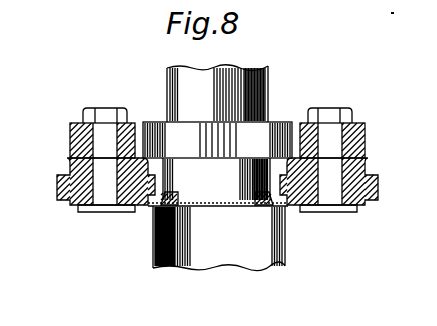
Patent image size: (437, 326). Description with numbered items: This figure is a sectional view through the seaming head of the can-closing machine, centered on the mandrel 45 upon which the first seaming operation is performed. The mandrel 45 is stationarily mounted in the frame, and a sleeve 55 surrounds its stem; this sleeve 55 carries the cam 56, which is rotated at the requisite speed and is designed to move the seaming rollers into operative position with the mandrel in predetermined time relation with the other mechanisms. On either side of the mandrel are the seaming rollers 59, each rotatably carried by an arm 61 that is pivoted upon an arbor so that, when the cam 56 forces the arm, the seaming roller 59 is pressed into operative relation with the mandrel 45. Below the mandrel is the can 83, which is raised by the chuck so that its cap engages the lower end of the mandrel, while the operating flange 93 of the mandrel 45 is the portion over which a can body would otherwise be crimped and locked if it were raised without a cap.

The sleeve 55 is at (217, 93).
The cam 56 is at (217, 140).
The mandrel 45 is at (216, 179).
The operating flange 93 is at (272, 208).
The can 83 is at (285, 250).
The arm 61 is at (70, 143).
The seaming roller 59 is at (57, 186).